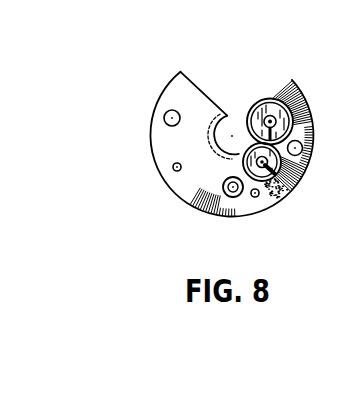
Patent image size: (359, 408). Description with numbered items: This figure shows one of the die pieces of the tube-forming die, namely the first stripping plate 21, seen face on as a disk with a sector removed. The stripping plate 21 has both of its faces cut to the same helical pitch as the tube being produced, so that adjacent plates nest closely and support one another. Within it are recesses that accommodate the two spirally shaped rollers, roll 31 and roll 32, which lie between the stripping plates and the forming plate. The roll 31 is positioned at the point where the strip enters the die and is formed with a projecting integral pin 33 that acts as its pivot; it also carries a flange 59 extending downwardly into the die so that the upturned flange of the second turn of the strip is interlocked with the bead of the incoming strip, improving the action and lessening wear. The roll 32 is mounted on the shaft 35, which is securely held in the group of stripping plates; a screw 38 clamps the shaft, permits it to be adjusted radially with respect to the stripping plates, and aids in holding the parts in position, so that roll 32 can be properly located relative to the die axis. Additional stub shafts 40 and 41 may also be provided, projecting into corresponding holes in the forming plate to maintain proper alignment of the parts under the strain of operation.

The stripping plate 21 is at (193, 207).
The spirally shaped roller 31 is at (252, 108).
The spirally shaped roller 32 is at (278, 196).
The projecting integral pin 33 is at (268, 117).
The shaft 35 is at (313, 120).
The screw 38 is at (302, 184).
The stub shaft 40 is at (258, 197).
The stub shaft 41 is at (173, 168).
The flange 59 is at (269, 99).